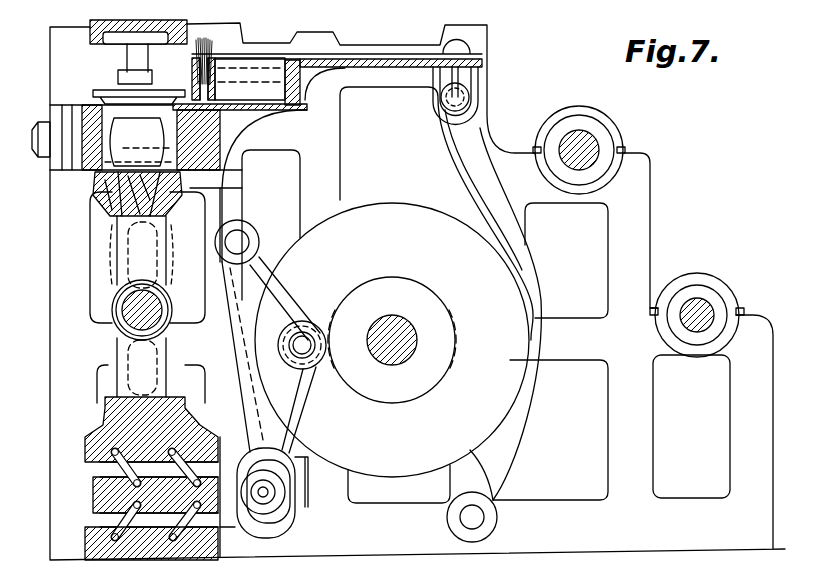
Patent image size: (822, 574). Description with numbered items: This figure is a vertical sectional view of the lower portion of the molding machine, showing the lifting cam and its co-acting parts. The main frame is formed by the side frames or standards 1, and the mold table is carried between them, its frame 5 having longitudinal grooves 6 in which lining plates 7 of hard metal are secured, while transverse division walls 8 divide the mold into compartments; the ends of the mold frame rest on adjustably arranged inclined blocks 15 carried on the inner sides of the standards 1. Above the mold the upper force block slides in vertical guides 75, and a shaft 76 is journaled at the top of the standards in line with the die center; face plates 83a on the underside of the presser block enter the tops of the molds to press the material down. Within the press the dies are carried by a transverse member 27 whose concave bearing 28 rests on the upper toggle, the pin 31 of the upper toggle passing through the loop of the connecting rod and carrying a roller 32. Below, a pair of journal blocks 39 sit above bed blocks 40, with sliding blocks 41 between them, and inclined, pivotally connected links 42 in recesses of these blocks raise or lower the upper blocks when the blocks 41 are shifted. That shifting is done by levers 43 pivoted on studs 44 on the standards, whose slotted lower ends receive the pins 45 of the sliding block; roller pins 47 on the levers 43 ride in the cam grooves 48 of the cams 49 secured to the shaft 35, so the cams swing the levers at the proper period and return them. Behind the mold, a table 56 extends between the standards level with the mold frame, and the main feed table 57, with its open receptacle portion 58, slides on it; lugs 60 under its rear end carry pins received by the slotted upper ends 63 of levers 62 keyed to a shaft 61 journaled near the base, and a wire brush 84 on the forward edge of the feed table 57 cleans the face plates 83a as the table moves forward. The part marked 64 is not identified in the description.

The side frames or standards 1 is at (735, 540).
The vertical guides 75 is at (135, 55).
The frame 5 is at (112, 118).
The shaft 76 is at (72, 126).
The longitudinal grooves 6 is at (93, 165).
The inclined blocks 15 is at (100, 193).
The lining plates 7 is at (108, 198).
The transverse division walls 8 is at (118, 210).
The transverse member 27 is at (120, 232).
The concave bearing 28 is at (130, 300).
The pin of the upper toggle 31 is at (135, 312).
The roller 32 is at (130, 335).
The journal blocks 39 is at (88, 455).
The sliding blocks 41 is at (93, 500).
The links 42 is at (160, 552).
The bed blocks 40 is at (228, 546).
The pins 45 is at (272, 497).
The levers 43 is at (281, 440).
The studs 44 is at (240, 238).
The roller pins 47 is at (312, 366).
The cams 49 is at (487, 423).
The cam grooves 48 is at (383, 403).
The shaft 35 is at (405, 348).
The frame portion 64 is at (483, 470).
The shaft 61 is at (473, 518).
The levers 62 is at (528, 250).
The slotted upper ends 63 is at (470, 123).
The lugs 60 is at (470, 83).
The main feed table 57 is at (482, 53).
The table 56 is at (302, 114).
The open receptacle portion 58 is at (290, 83).
The wire brush 84 is at (300, 48).
The face plates 83a is at (195, 48).